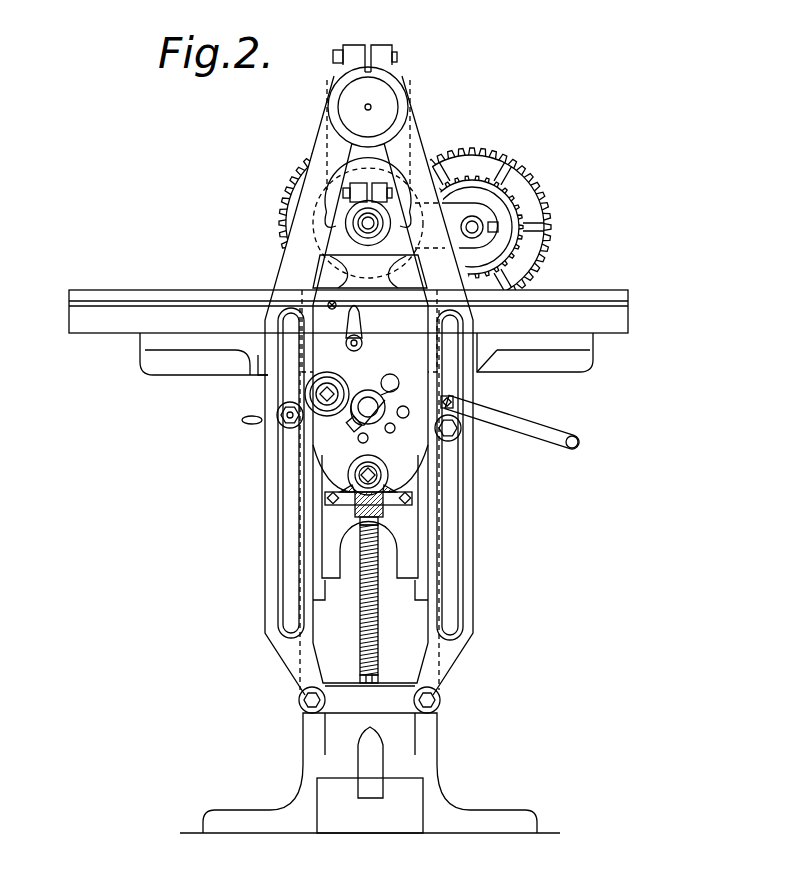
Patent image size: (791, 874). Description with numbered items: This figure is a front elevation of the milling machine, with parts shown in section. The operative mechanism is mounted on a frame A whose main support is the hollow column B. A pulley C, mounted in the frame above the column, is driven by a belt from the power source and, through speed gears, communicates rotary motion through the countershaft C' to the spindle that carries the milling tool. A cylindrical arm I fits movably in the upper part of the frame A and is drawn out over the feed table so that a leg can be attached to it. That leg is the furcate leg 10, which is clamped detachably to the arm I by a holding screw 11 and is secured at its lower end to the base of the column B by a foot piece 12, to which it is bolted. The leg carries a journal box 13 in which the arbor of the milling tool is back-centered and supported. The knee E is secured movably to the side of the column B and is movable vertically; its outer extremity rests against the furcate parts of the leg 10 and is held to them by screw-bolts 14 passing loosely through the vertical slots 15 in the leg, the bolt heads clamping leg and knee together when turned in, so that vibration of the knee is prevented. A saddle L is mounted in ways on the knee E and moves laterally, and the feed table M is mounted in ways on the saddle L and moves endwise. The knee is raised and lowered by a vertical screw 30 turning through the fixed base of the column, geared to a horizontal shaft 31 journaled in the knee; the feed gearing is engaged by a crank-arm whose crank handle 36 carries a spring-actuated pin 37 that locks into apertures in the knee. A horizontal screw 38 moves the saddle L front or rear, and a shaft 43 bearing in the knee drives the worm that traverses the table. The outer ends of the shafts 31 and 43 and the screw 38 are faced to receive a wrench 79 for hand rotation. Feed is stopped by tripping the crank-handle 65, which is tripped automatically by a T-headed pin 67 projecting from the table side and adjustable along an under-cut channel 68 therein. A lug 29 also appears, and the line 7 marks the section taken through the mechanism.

The cylindrical arm I is at (382, 101).
The holding screw 11 is at (333, 57).
The furcate leg 10 is at (474, 496).
The vertical slots 15 is at (291, 533).
The pulley C is at (289, 204).
The journal box 13 is at (347, 212).
The countershaft C' is at (485, 227).
The frame A is at (318, 275).
The section line 7 7 is at (351, 364).
The feed table M is at (604, 298).
The under-cut channel 68 is at (236, 300).
The saddle L is at (583, 356).
The pin 67 is at (332, 309).
The crank-handle 65 is at (361, 322).
The screw 38 is at (320, 394).
The crank handle 36 is at (375, 383).
The spring-actuated pin 37 is at (394, 388).
The shaft 43 is at (455, 400).
The wrench 79 is at (528, 425).
The lug 29 is at (243, 422).
The screw-bolts 14 is at (284, 420).
The horizontal shaft 31 is at (352, 478).
The knee E is at (321, 557).
The screw 30 is at (380, 620).
The foot piece 12 is at (302, 718).
The hollow column B is at (440, 757).